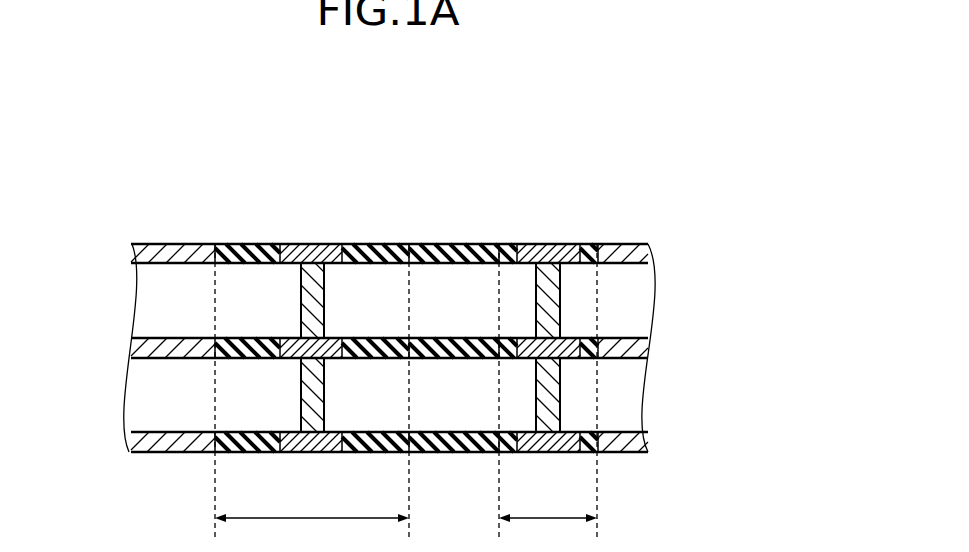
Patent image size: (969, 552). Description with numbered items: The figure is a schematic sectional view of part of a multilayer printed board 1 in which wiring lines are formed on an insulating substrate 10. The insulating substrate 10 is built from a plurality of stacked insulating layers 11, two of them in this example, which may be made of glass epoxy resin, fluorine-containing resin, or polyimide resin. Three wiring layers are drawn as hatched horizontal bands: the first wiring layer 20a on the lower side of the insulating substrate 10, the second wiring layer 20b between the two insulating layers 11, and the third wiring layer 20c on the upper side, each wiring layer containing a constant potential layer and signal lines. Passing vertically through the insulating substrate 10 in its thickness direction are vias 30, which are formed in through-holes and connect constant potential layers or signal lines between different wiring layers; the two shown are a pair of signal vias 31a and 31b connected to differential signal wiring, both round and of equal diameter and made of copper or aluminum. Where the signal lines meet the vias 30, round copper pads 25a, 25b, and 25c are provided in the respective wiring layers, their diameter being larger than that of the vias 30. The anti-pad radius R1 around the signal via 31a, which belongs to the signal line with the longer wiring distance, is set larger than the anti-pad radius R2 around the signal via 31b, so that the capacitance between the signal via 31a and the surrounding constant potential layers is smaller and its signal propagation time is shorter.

The multilayer printed board 1 is at (612, 126).
The insulating substrate 10 is at (439, 348).
The insulating layer 11 is at (627, 297).
The first wiring layer 20a is at (355, 468).
The second wiring layer 20b is at (355, 421).
The third wiring layer 20c is at (356, 231).
The pad 25a is at (318, 444).
The pad 25b is at (331, 347).
The pad 25c is at (312, 244).
The via 30 is at (430, 274).
The signal via 31a is at (314, 301).
The signal via 31b is at (548, 300).
The anti-pad radius R1 is at (312, 394).
The anti-pad radius R2 is at (548, 394).